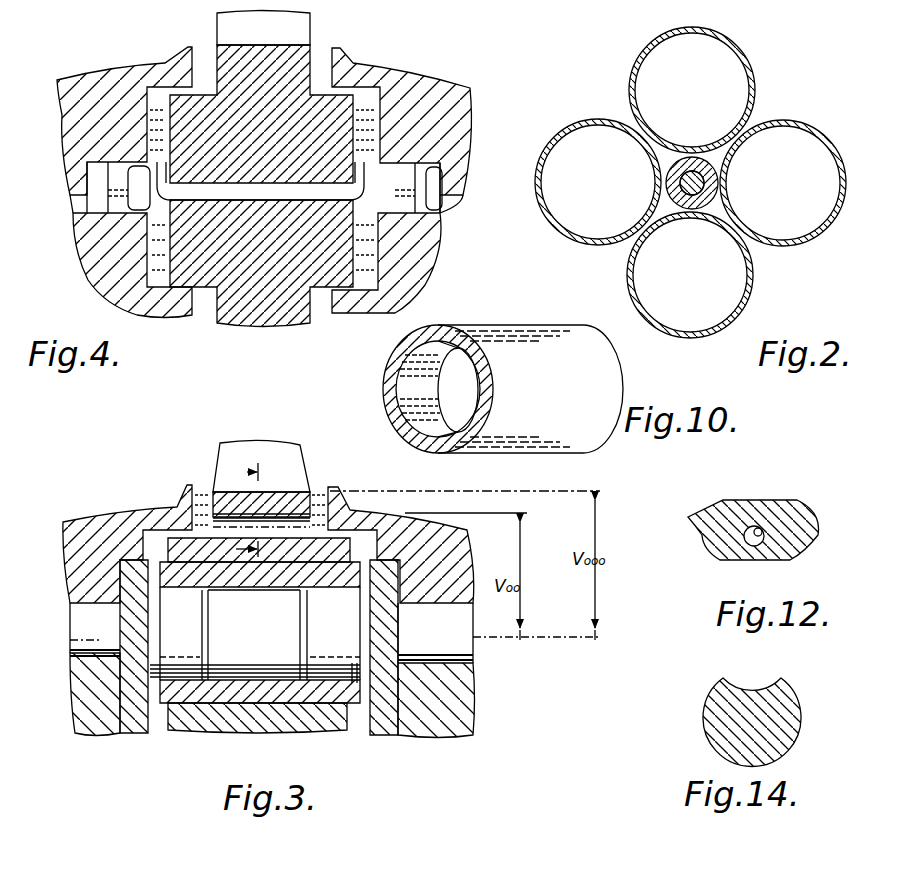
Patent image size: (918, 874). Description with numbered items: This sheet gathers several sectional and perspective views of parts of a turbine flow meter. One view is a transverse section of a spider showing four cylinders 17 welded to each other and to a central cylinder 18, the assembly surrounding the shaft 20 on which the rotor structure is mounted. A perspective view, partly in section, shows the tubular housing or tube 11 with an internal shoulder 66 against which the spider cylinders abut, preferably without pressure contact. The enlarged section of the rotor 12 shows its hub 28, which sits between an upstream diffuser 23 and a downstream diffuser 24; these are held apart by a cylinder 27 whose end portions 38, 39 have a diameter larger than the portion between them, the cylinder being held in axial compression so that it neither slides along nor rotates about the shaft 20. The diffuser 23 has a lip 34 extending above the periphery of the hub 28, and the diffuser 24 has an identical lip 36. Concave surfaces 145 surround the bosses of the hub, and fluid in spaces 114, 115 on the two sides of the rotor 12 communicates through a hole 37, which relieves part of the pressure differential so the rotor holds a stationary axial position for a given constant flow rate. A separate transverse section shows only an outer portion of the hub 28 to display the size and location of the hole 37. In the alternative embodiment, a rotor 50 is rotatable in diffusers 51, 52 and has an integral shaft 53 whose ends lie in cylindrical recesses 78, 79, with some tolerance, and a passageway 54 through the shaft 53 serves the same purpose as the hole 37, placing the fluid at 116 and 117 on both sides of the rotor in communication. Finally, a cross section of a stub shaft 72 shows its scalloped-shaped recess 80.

In FIG. 4, the diffuser 51 is at (112, 61).
In FIG. 4, the fluid space 116 is at (153, 110).
In FIG. 4, the rotor 50 is at (313, 44).
In FIG. 4, the fluid space 117 is at (367, 110).
In FIG. 4, the diffuser 52 is at (430, 70).
In FIG. 4, the cylindrical recess 78 is at (90, 178).
In FIG. 4, the cylindrical recess 79 is at (445, 178).
In FIG. 4, the shaft 53 is at (78, 244).
In FIG. 4, the passageway 54 is at (262, 196).
In FIG. 2, the cylinder 17 is at (602, 98).
In FIG. 2, the cylinder 18 is at (680, 157).
In FIG. 2, the shaft 20 is at (718, 184).
In FIG. 3, the shaft 20 is at (82, 633).
In FIG. 10, the tube 11 is at (514, 324).
In FIG. 10, the internal shoulder 66 is at (439, 399).
In FIG. 3, the rotor 12 is at (216, 458).
In FIG. 3, the hub 28 is at (203, 490).
In FIG. 12, the hub 28 is at (738, 497).
In FIG. 3, the fluid space 114 is at (202, 508).
In FIG. 3, the lip 34 is at (177, 497).
In FIG. 3, the diffuser 23 is at (98, 513).
In FIG. 3, the concave surface 145 is at (73, 555).
In FIG. 3, the end portion 38 is at (190, 670).
In FIG. 3, the cylinder 27 is at (260, 683).
In FIG. 3, the end portion 39 is at (353, 663).
In FIG. 3, the fluid space 115 is at (316, 493).
In FIG. 3, the lip 36 is at (342, 512).
In FIG. 3, the diffuser 24 is at (446, 518).
In FIG. 12, the hole 37 is at (764, 532).
In FIG. 14, the scalloped-shaped recess 80 is at (737, 680).
In FIG. 14, the stub shaft 72 is at (702, 734).